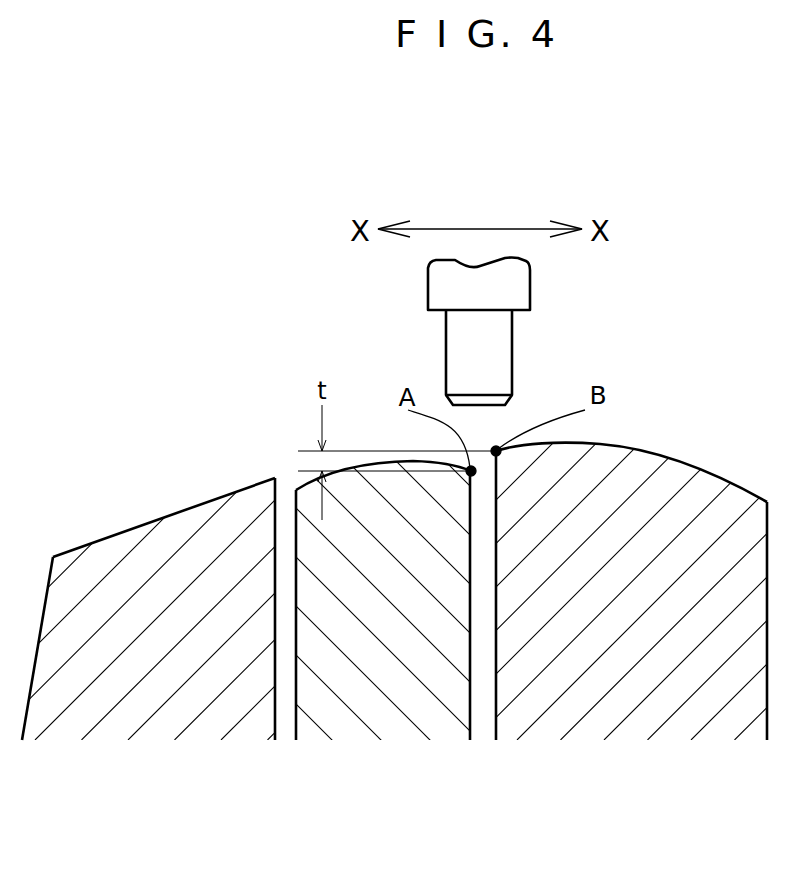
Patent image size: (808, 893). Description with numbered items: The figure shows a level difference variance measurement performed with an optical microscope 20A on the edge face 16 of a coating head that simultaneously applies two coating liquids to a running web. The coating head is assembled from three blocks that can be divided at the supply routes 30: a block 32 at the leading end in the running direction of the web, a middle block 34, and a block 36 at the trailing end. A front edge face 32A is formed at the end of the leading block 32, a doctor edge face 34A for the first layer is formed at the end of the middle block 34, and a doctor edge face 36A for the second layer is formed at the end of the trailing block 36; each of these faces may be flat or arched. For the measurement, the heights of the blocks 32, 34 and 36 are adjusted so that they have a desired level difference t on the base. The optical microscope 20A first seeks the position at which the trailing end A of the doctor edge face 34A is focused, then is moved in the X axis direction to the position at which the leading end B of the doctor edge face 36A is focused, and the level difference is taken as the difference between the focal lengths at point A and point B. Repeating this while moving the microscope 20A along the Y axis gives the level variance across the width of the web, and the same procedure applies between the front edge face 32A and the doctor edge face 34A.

The edge face 16 is at (535, 393).
The optical microscope 20A is at (505, 350).
The supply routes 30 is at (285, 717).
The block at the leading end 32 is at (148, 700).
The front edge face 32A is at (145, 523).
The middle block 34 is at (395, 693).
The doctor edge face for a first layer 34A is at (400, 453).
The block at the trailing end 36 is at (627, 683).
The doctor edge face for a second layer 36A is at (653, 452).